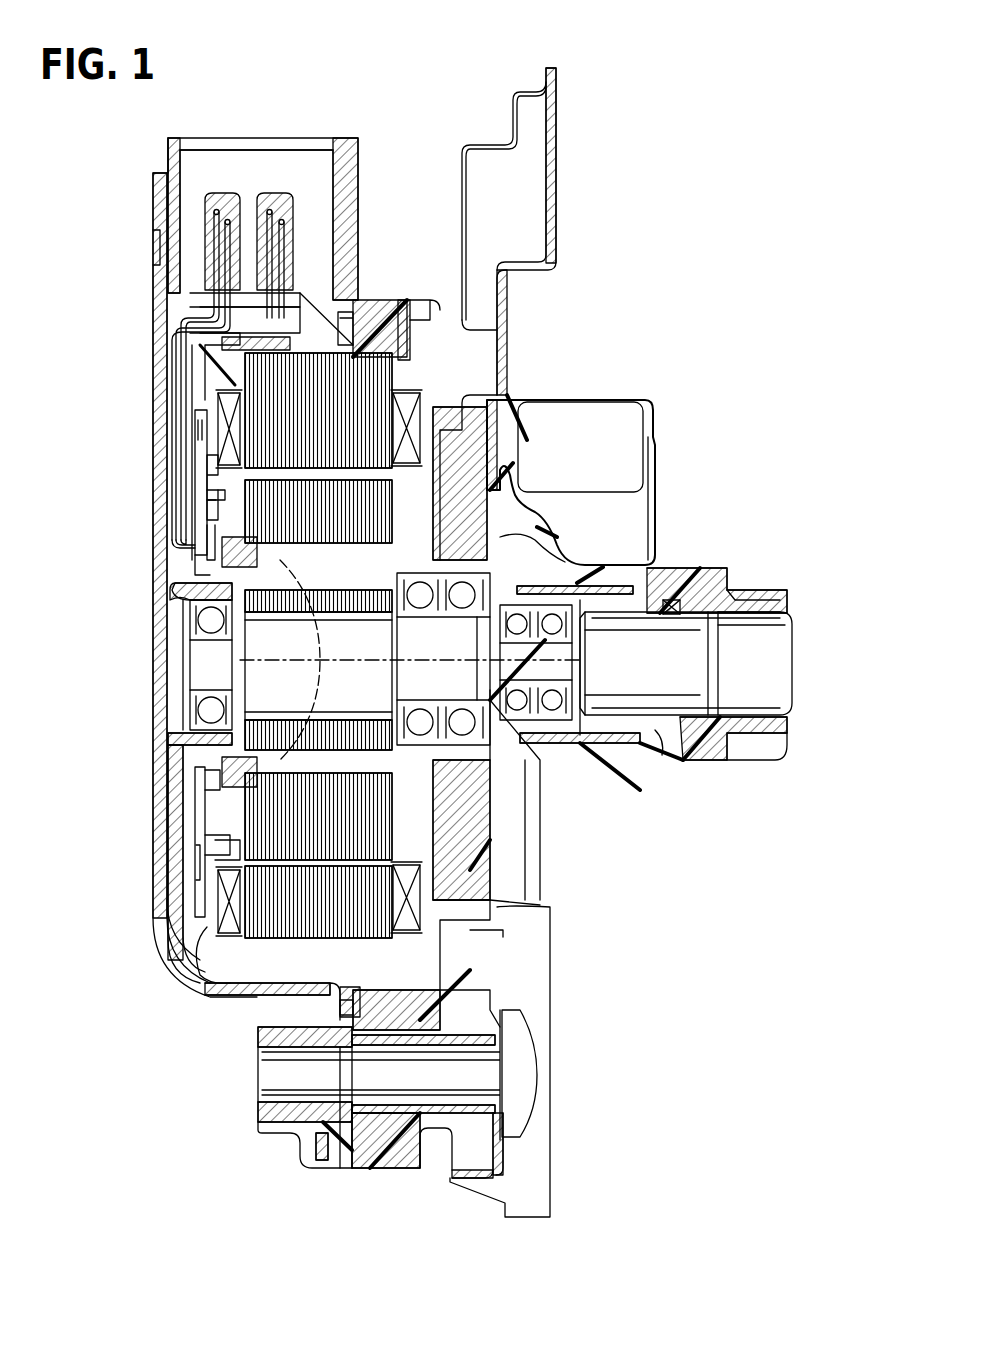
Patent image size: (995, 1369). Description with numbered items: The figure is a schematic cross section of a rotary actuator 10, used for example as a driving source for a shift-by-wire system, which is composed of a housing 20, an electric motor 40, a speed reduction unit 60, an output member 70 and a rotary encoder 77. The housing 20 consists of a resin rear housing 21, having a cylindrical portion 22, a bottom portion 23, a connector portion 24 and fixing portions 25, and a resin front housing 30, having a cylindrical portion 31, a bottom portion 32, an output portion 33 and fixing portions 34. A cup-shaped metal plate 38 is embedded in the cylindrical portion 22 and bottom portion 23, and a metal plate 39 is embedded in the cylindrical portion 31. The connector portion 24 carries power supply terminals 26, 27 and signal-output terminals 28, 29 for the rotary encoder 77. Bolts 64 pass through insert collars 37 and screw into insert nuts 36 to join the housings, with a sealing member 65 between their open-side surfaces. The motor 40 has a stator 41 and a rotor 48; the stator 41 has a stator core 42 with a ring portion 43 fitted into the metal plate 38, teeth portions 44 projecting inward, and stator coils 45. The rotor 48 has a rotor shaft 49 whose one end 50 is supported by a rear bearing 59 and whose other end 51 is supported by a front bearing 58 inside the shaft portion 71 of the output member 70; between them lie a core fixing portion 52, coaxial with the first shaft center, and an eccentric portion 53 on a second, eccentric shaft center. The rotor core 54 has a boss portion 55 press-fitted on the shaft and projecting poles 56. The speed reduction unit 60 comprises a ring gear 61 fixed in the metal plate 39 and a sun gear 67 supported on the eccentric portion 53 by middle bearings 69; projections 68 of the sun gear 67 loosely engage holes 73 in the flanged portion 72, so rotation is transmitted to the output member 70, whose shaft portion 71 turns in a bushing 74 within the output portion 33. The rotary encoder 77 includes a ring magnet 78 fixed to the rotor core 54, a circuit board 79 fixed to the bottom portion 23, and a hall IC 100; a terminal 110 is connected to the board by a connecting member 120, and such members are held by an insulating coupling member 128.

The rotary actuator 10 is at (120, 146).
The housing 20 is at (340, 80).
The rear housing 21 is at (348, 134).
The cylindrical portion 22 is at (225, 1003).
The bottom portion 23 is at (158, 878).
The connector portion 24 is at (160, 243).
The fixing portions 25 is at (305, 1167).
The power supply terminal 26 is at (216, 210).
The power supply terminal 27 is at (228, 220).
The signal-output terminal 28 is at (270, 210).
The signal-output terminal 29 is at (283, 220).
The front housing 30 is at (402, 292).
The cylindrical portion 31 is at (385, 308).
The bottom portion 32 is at (540, 440).
The output portion 33 is at (722, 745).
The fixing portions 34 is at (402, 1160).
The insert nut 36 is at (268, 1110).
The insert collar 37 is at (375, 1165).
The metal plate 38 is at (160, 935).
The metal plate 39 is at (420, 300).
The electric motor 40 is at (245, 965).
The stator 41 is at (66, 386).
The stator core 42 is at (102, 366).
The ring portion 43 is at (255, 352).
The teeth portions 44 is at (228, 415).
The stator coils 45 is at (215, 436).
The rotor 48 is at (664, 812).
The rotor shaft 49 is at (455, 738).
The one end 50 is at (280, 678).
The other end 51 is at (650, 672).
The core fixing portion 52 is at (192, 576).
The eccentric portion 53 is at (690, 640).
The rotor core 54 is at (620, 842).
The boss portion 55 is at (462, 790).
The projecting poles 56 is at (470, 830).
The front bearing 58 is at (632, 682).
The rear bearing 59 is at (240, 647).
The speed reduction unit 60 is at (604, 322).
The ring gear 61 is at (466, 385).
The bolts 64 is at (490, 1072).
The sealing member 65 is at (345, 1125).
The sun gear 67 is at (472, 445).
The projections 68 is at (655, 443).
The middle bearings 69 is at (600, 527).
The output member 70 is at (722, 600).
The shaft portion 71 is at (660, 737).
The flanged portion 72 is at (480, 880).
The holes 73 is at (560, 492).
The bushing 74 is at (684, 603).
The rotary encoder 77 is at (92, 757).
The magnet 78 is at (200, 796).
The circuit board 79 is at (205, 842).
The hall IC 100 is at (205, 772).
The terminal 110 is at (205, 490).
The connecting member 120 is at (200, 512).
The coupling member 128 is at (200, 543).